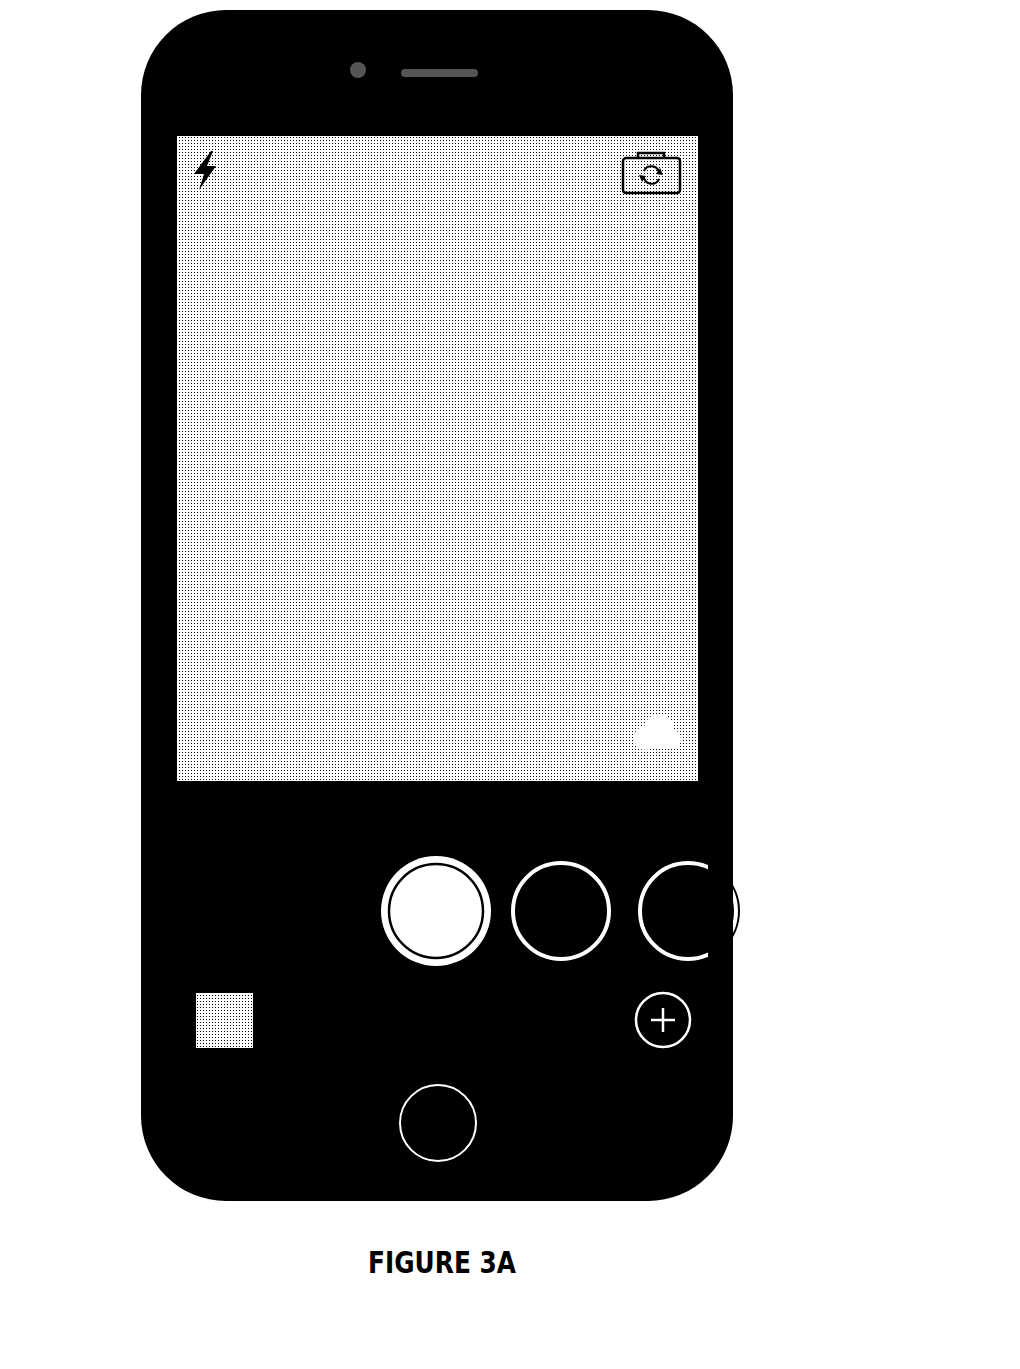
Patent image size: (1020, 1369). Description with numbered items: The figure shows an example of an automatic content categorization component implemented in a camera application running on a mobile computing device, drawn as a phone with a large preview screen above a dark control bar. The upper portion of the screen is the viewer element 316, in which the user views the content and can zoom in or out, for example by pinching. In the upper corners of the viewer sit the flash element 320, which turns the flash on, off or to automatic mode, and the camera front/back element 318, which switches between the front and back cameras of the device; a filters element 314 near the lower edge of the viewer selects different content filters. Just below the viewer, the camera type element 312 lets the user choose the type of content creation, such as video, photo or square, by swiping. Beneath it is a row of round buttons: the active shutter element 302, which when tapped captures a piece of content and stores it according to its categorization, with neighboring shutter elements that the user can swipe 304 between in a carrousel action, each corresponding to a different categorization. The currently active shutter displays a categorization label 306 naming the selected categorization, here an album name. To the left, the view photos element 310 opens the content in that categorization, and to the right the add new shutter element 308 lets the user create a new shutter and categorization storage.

The active shutter element 302 is at (349, 908).
The swipe 304 is at (721, 893).
The categorization label 306 is at (515, 985).
The add new shutter element 308 is at (693, 1013).
The view photos element 310 is at (165, 1013).
The camera type element 312 is at (269, 796).
The filters element 314 is at (686, 718).
The viewer element 316 is at (458, 491).
The camera front/back element 318 is at (691, 168).
The flash element 320 is at (162, 165).